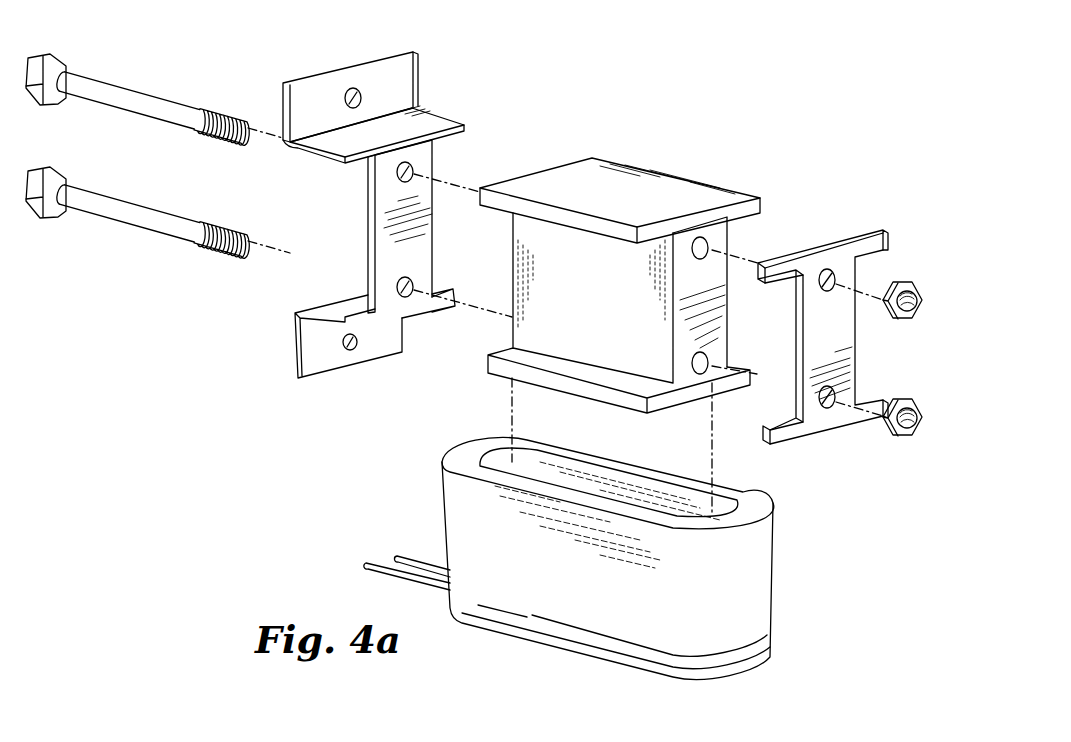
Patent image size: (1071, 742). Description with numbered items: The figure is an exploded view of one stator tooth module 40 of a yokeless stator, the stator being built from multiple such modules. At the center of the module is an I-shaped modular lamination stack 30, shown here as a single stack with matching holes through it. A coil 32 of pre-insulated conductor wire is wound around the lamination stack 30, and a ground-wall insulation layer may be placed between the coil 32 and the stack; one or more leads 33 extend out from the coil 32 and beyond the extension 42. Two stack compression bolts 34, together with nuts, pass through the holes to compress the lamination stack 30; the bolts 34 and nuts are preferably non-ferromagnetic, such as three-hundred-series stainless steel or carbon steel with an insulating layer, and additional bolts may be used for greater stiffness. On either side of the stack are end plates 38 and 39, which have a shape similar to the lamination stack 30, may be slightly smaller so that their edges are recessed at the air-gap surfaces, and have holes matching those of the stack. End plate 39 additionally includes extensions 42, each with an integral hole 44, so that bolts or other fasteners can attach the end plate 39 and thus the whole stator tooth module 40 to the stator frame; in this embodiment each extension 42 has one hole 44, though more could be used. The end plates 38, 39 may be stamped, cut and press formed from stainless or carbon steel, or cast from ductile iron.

The modular lamination stack 30 is at (603, 185).
The coil 32 is at (472, 460).
The leads 33 is at (412, 560).
The stack compression bolts 34 is at (138, 217).
The end plate 38 is at (820, 262).
The end plate 39 is at (380, 229).
The stator tooth module 40 is at (708, 150).
The extension 42 is at (282, 102).
The hole 44 is at (358, 97).